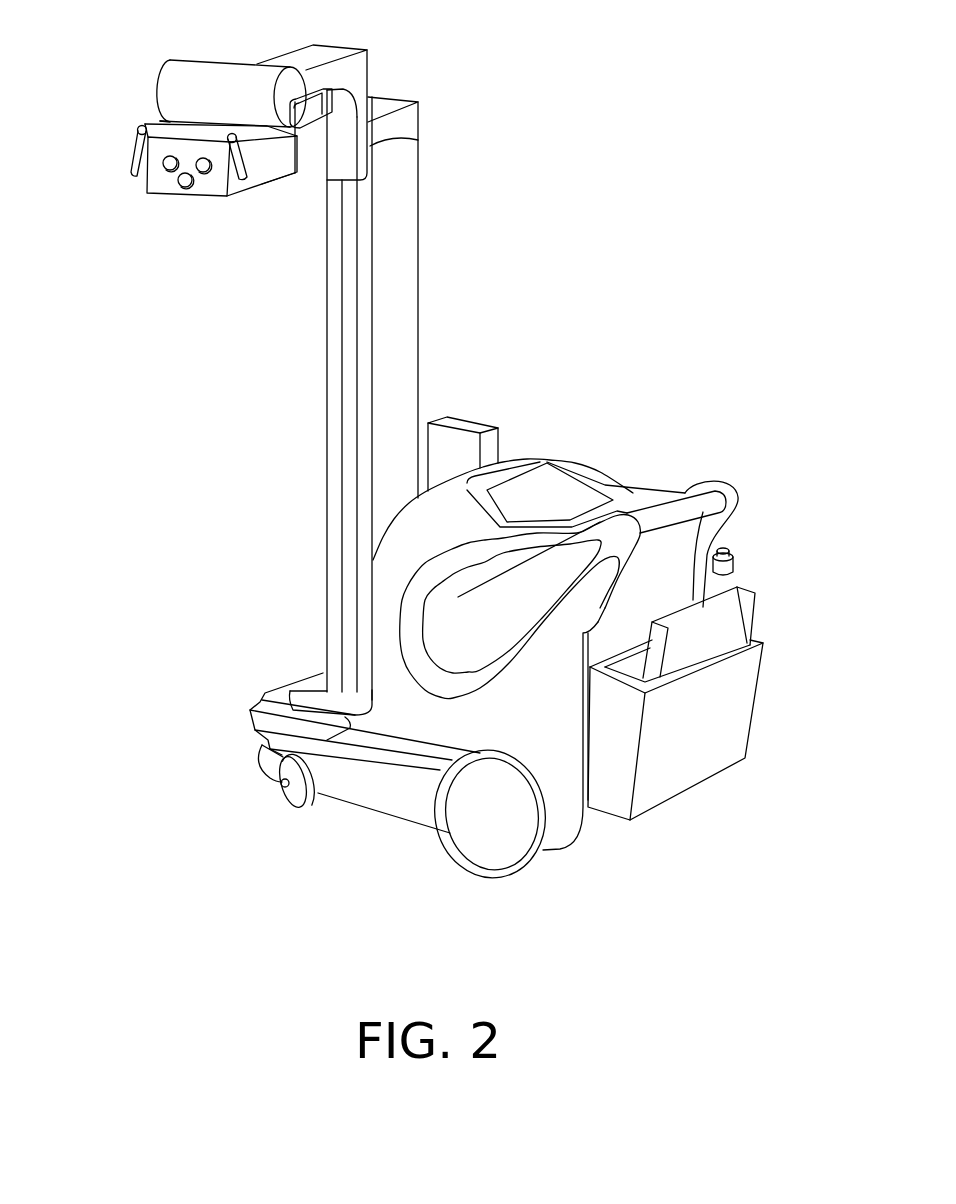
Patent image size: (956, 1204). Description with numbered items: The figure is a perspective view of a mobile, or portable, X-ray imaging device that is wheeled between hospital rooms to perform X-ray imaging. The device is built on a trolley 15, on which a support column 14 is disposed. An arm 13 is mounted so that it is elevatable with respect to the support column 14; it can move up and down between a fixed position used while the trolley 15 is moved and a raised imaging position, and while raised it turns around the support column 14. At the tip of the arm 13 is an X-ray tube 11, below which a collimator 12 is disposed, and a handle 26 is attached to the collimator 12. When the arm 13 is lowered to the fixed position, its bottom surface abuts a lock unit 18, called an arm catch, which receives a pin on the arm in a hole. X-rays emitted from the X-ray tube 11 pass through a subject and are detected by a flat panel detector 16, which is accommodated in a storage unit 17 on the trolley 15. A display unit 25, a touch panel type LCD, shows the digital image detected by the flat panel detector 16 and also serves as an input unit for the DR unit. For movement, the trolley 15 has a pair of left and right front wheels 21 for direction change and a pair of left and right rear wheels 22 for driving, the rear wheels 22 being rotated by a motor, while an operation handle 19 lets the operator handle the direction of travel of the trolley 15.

The X-ray tube 11 is at (163, 82).
The collimator 12 is at (235, 198).
The arm 13 is at (355, 75).
The support column 14 is at (393, 262).
The trolley 15 is at (555, 807).
The flat panel detector 16 is at (727, 622).
The storage unit 17 is at (720, 698).
The lock unit 18 is at (463, 420).
The operation handle 19 is at (668, 517).
The front wheels 21 is at (298, 793).
The rear wheels 22 is at (497, 847).
The display unit 25 is at (555, 488).
The handle 26 is at (130, 177).